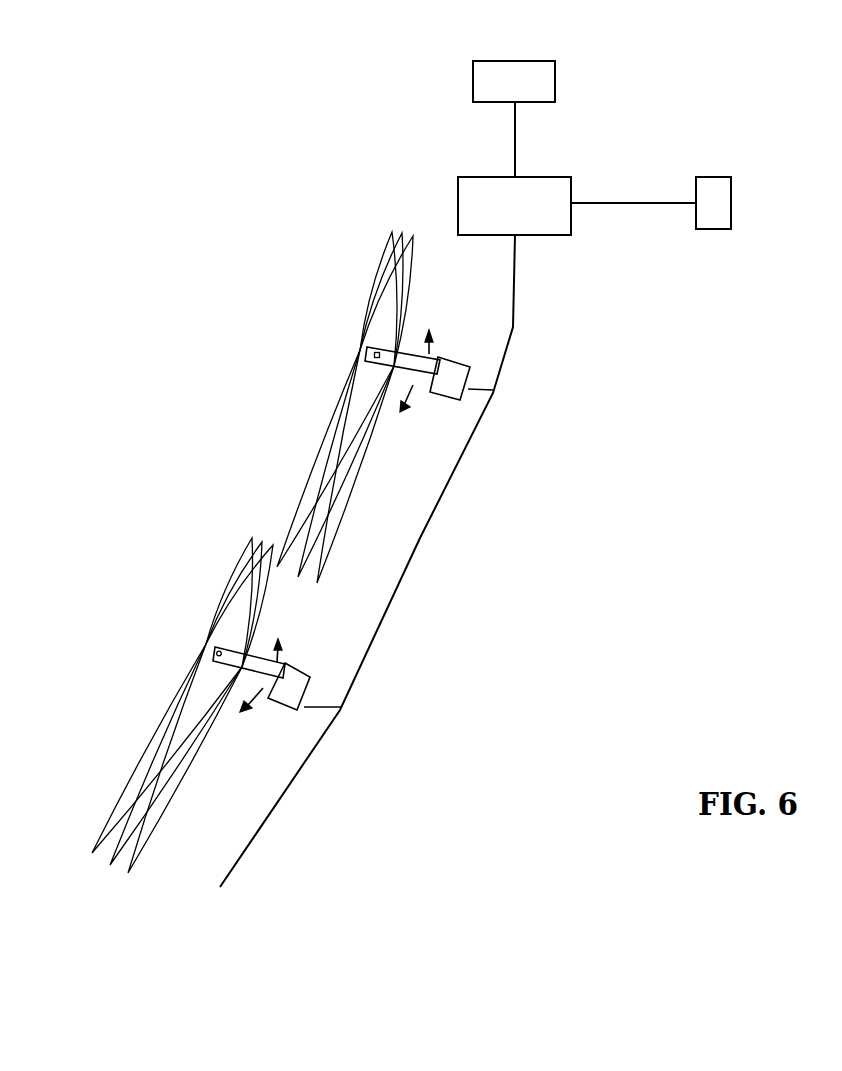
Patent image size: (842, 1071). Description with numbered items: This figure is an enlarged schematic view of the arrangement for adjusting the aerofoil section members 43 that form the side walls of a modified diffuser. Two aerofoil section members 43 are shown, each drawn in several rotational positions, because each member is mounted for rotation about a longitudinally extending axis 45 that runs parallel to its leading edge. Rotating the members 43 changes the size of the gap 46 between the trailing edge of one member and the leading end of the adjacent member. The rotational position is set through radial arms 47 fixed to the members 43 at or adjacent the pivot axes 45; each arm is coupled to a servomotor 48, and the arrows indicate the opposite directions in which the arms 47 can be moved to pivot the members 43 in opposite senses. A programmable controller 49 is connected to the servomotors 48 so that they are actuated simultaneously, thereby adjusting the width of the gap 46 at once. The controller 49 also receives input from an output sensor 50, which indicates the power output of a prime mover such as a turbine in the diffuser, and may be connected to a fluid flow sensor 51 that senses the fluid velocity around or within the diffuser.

The aerofoil section members 43 is at (387, 311).
The longitudinally extending axes 45 is at (372, 354).
The gap 46 is at (273, 532).
The radial arms 47 is at (412, 350).
The servomotors 48 is at (447, 371).
The programmable controller 49 is at (577, 206).
The output sensor 50 is at (514, 119).
The fluid flow sensor 51 is at (713, 203).